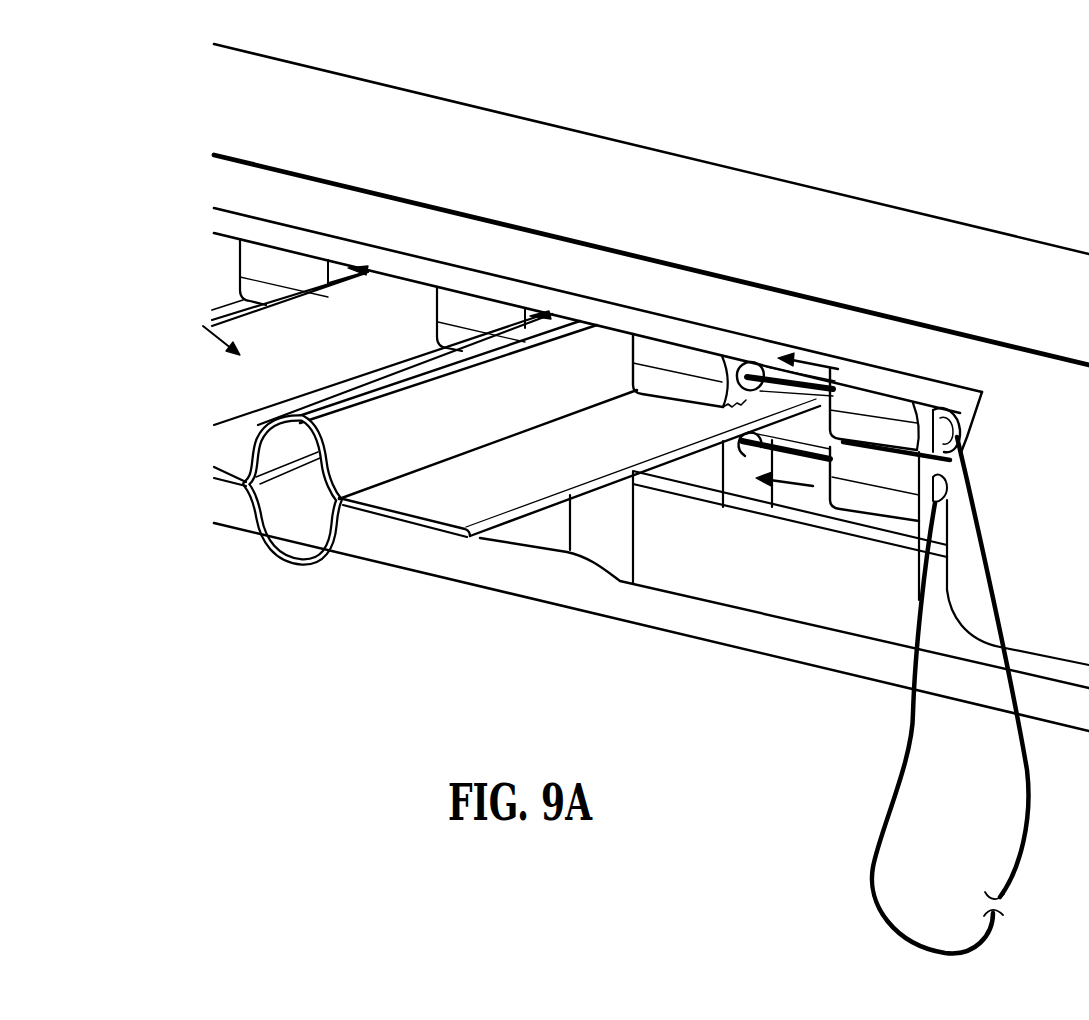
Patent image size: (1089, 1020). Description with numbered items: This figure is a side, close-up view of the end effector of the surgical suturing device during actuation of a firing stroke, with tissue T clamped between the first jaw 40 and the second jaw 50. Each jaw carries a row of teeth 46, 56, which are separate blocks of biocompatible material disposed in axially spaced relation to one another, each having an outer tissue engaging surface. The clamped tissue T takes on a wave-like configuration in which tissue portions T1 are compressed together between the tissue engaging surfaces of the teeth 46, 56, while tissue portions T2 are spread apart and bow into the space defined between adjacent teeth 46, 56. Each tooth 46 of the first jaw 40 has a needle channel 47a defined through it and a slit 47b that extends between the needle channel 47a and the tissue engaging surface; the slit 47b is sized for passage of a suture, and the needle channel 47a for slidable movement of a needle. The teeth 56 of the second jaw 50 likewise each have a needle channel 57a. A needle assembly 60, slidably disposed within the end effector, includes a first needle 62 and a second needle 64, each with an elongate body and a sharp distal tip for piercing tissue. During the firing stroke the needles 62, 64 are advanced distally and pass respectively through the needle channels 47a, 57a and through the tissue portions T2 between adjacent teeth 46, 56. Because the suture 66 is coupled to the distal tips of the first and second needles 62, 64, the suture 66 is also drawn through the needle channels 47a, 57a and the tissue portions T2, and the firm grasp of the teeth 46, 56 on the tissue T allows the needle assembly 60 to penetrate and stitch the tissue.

The first jaw 40 is at (447, 117).
The teeth 46 is at (670, 357).
The needle channel 47a is at (748, 365).
The slit 47b is at (760, 367).
The first needle 62 is at (827, 384).
The second needle 64 is at (815, 452).
The needle channel 57a is at (737, 449).
The needle assembly 60 is at (753, 490).
The tissue portions T2 is at (285, 502).
The tissue portions T1 is at (430, 508).
The teeth 56 is at (697, 470).
The second jaw 50 is at (548, 590).
The tissue T is at (210, 328).
The suture 66 is at (870, 812).